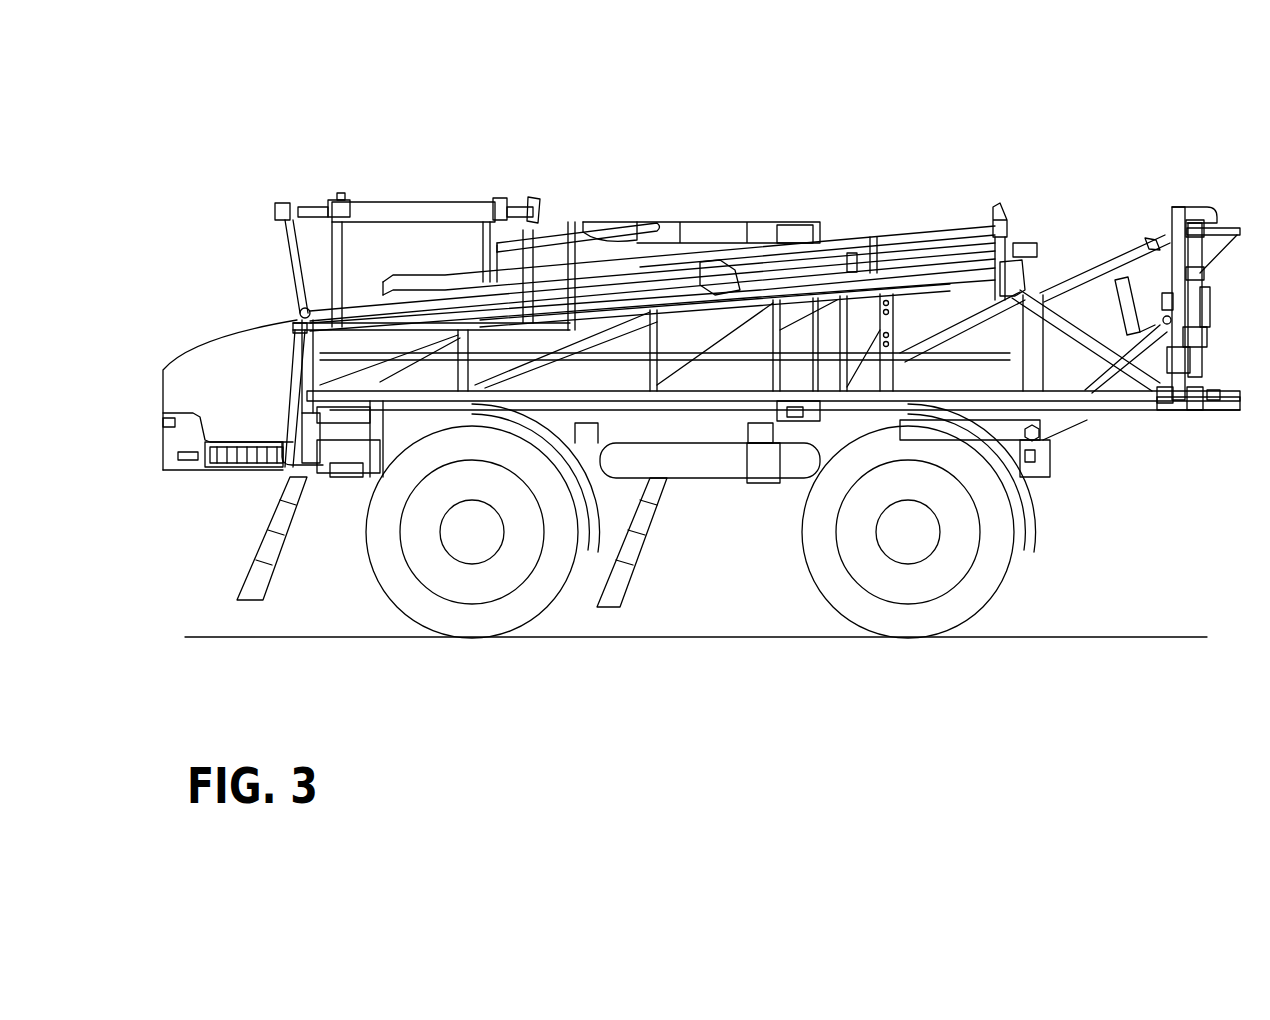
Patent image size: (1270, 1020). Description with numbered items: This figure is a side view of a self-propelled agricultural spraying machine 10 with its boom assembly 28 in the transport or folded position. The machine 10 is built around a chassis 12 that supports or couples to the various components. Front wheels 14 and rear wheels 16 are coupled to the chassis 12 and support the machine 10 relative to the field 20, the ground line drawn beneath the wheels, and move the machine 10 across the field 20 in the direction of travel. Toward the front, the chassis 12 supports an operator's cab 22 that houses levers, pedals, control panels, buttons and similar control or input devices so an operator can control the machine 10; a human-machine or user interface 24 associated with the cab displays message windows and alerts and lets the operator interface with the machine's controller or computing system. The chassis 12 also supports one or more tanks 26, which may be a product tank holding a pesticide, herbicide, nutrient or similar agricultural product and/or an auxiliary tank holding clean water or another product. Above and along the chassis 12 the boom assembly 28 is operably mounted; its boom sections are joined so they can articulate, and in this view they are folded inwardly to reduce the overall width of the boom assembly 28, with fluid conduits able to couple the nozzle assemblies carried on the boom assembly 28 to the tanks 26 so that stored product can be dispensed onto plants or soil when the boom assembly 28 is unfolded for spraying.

The machine 10 is at (1038, 163).
The chassis 12 is at (700, 463).
The front wheels 14 is at (540, 588).
The rear wheels 16 is at (975, 595).
The field 20 is at (1160, 637).
The operator's cab 22 is at (405, 202).
The user interface 24 is at (326, 275).
The tanks 26 is at (597, 250).
The boom assembly 28 is at (852, 230).